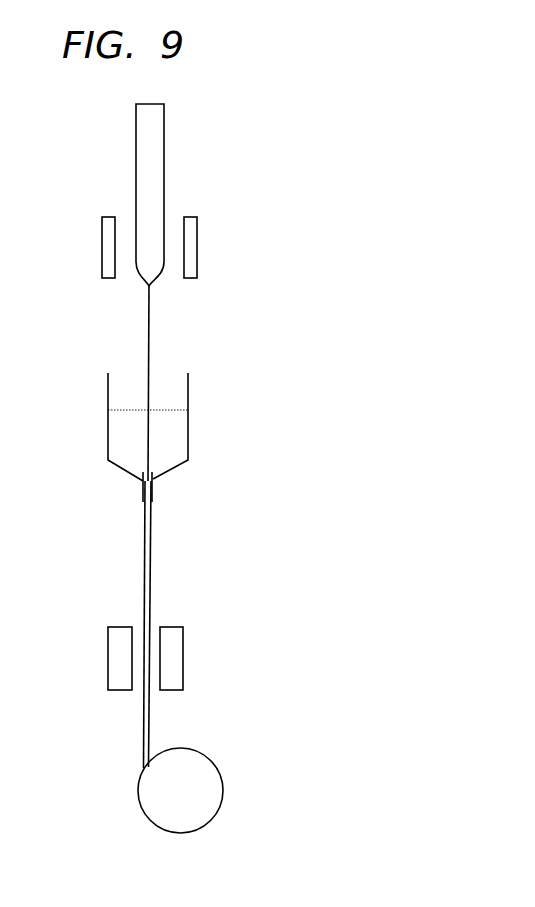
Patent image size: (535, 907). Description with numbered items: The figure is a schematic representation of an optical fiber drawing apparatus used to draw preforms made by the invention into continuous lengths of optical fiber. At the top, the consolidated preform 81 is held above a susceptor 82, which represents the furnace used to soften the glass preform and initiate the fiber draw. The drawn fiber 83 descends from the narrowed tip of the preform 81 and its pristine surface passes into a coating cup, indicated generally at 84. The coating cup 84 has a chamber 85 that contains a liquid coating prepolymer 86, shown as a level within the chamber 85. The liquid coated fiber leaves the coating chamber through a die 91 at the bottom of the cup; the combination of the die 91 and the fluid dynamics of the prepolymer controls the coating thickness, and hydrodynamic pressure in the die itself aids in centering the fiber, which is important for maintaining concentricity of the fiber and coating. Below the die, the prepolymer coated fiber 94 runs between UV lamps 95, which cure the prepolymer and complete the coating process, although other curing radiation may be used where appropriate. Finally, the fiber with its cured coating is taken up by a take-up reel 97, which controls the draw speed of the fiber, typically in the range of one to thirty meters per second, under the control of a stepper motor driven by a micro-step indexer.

The preform 81 is at (165, 153).
The susceptor 82 is at (197, 250).
The drawn fiber 83 is at (149, 320).
The coating cup 84 is at (148, 442).
The chamber 85 is at (188, 383).
The coating prepolymer 86 is at (117, 447).
The die 91 is at (143, 487).
The prepolymer coated fiber 94 is at (148, 582).
The UV lamps 95 is at (108, 660).
The take-up reel 97 is at (215, 763).